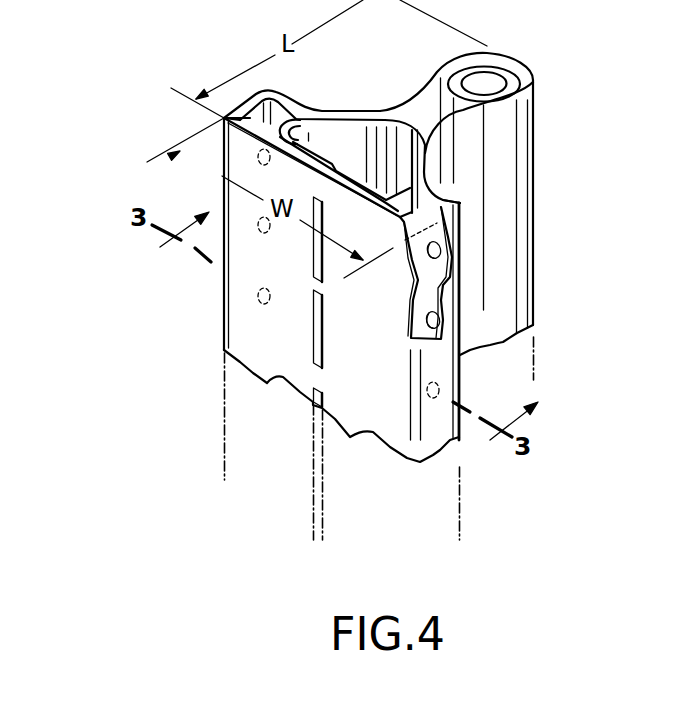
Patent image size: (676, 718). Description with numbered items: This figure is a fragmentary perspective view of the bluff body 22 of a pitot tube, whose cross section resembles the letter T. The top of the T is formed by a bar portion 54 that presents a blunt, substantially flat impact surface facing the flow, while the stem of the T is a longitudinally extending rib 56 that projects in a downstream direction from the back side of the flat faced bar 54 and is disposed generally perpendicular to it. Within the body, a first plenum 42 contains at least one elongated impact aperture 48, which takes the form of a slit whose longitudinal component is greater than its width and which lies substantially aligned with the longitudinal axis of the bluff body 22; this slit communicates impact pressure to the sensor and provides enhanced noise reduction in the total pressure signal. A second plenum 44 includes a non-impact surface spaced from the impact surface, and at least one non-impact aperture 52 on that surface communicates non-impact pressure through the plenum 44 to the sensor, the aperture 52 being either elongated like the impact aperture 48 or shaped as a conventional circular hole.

The bluff body 22 is at (120, 154).
The first plenum 42 is at (356, 148).
The second plenum 44 is at (226, 118).
The impact aperture 48 is at (313, 340).
The non-impact aperture 52 is at (435, 256).
The bar portion 54 is at (247, 273).
The stem portion 56 is at (483, 150).